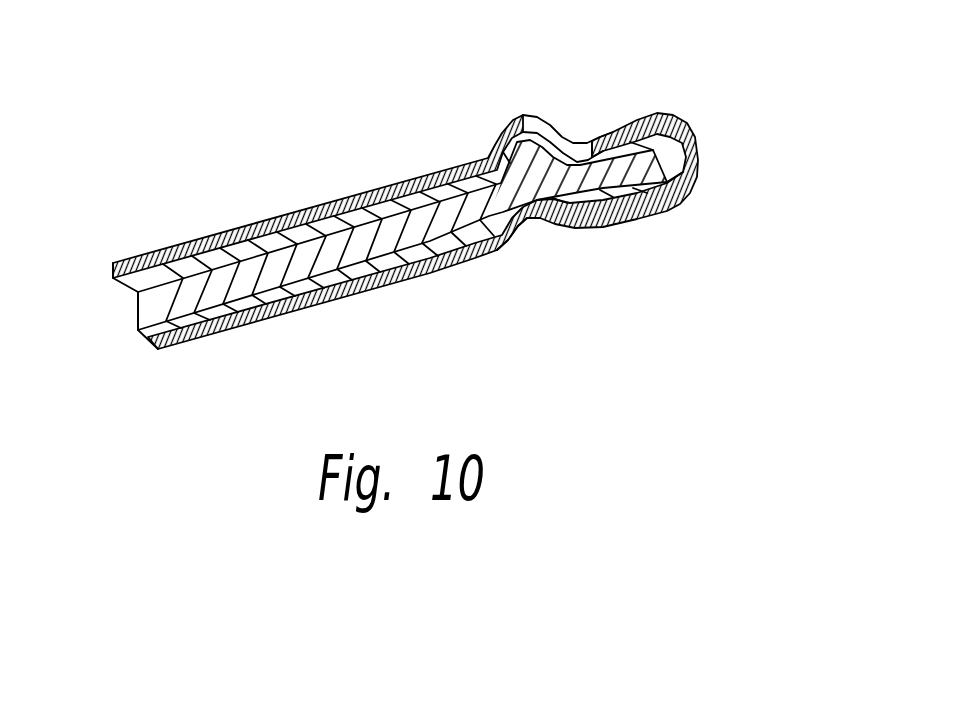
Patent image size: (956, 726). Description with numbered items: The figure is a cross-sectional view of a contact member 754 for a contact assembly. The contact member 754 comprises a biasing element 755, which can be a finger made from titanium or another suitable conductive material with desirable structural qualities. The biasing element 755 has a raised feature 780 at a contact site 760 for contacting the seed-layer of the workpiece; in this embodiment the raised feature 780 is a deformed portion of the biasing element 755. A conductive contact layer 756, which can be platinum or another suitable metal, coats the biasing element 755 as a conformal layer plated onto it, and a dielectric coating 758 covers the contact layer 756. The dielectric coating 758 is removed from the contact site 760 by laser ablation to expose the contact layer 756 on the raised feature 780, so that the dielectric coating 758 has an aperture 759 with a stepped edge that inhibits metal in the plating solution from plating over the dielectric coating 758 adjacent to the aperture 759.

The contact member 754 is at (191, 388).
The biasing element 755 is at (258, 280).
The conductive contact layer 756 is at (545, 120).
The dielectric coating 758 is at (503, 252).
The aperture 759 is at (474, 165).
The contact site 760 is at (497, 78).
The raised feature 780 is at (491, 142).